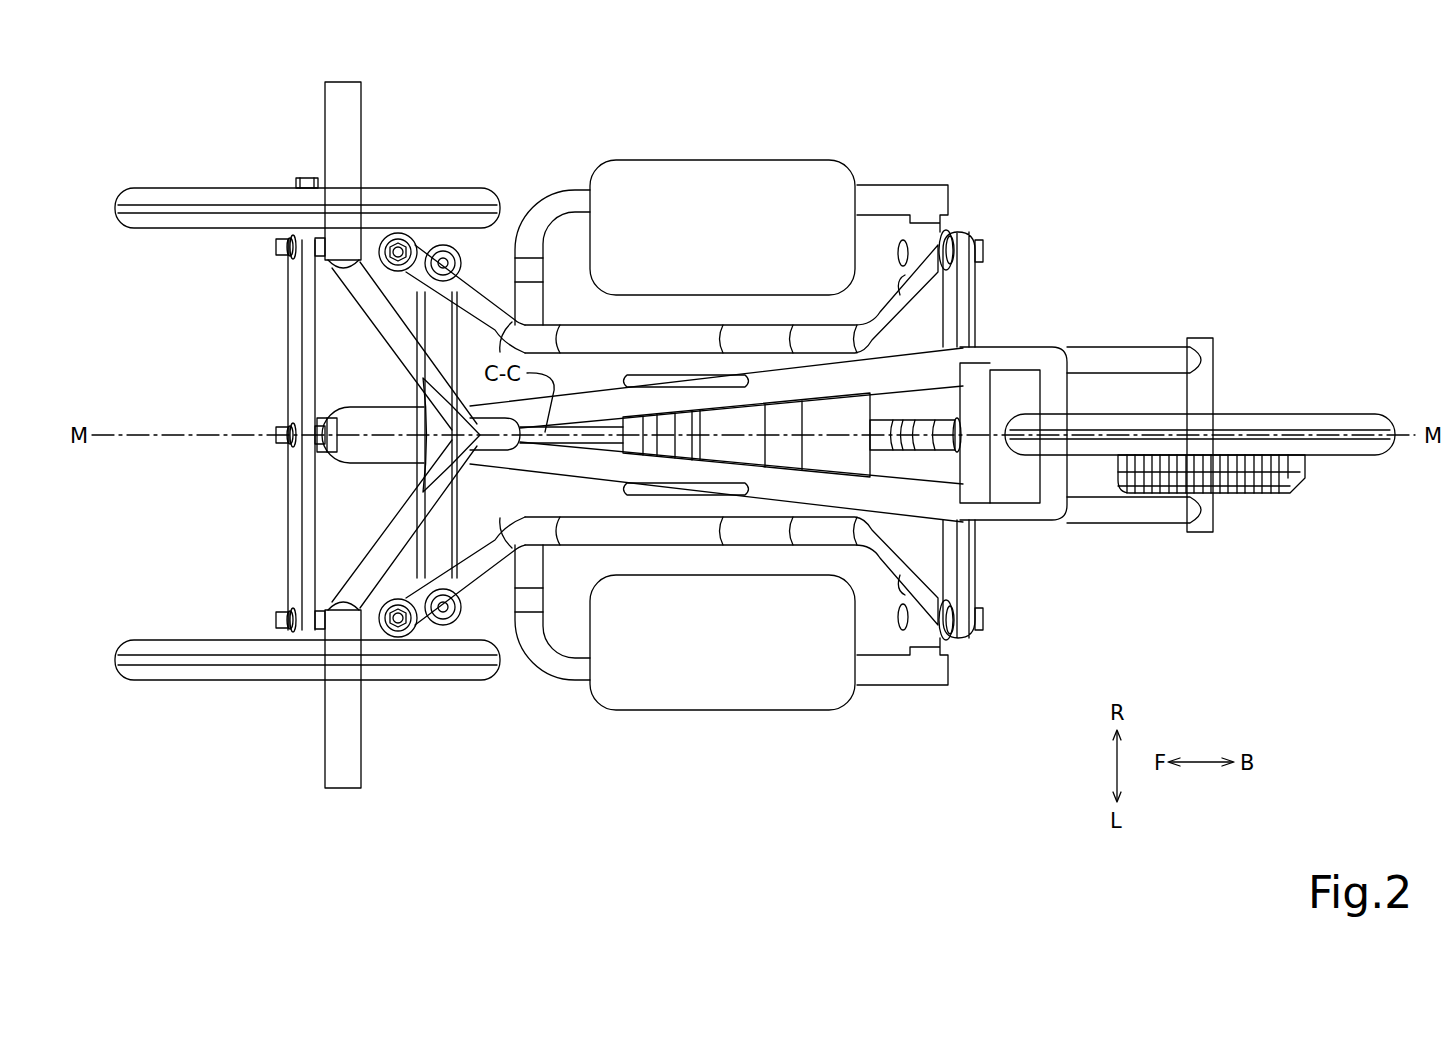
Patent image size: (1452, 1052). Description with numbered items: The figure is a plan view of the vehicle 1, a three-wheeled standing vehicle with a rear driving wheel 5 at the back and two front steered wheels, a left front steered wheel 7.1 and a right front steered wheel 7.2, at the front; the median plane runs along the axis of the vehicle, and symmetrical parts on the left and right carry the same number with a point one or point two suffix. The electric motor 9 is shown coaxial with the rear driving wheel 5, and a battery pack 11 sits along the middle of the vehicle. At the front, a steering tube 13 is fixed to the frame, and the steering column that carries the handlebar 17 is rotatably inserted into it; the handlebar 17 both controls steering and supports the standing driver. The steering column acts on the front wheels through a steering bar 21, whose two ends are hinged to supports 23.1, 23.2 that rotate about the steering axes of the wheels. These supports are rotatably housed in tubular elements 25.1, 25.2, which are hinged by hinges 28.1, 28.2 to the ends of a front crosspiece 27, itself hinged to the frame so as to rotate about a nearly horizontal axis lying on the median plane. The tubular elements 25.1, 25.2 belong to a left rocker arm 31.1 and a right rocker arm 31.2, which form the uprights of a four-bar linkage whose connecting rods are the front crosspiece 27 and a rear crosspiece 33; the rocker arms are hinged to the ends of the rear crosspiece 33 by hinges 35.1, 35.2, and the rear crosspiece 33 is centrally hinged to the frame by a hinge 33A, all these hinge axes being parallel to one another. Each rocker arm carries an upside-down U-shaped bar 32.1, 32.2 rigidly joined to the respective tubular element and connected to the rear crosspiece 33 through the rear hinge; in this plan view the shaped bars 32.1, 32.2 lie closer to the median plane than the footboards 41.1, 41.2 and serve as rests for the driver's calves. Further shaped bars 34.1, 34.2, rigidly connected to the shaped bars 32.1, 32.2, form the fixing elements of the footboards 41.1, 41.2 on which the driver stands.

The vehicle 1 is at (1226, 104).
The rear driving wheel 5 is at (1332, 415).
The left front steered wheel 7.1 is at (447, 677).
The right front steered wheel 7.2 is at (445, 196).
The electric motor 9 is at (1262, 494).
The battery pack 11 is at (838, 432).
The steering tube 13 is at (372, 420).
The handlebar 17 is at (382, 323).
The steering bar 21 is at (445, 512).
The support 23.1 is at (455, 625).
The support 23.2 is at (455, 245).
The tubular element 25.1 is at (370, 624).
The tubular element 25.2 is at (370, 248).
The front crosspiece 27 is at (310, 512).
The hinge 28.1 is at (275, 620).
The hinge 28.2 is at (275, 250).
The left rocker arm 31.1 is at (922, 688).
The right rocker arm 31.2 is at (922, 185).
The shaped bar 32.1 is at (680, 525).
The shaped bar 32.2 is at (680, 345).
The rear crosspiece 33 is at (953, 306).
The hinge 33A is at (958, 440).
The shaped bar 34.1 is at (568, 665).
The shaped bar 34.2 is at (568, 200).
The hinge 35.1 is at (965, 630).
The hinge 35.2 is at (965, 240).
The footboard 41.1 is at (722, 642).
The footboard 41.2 is at (722, 227).